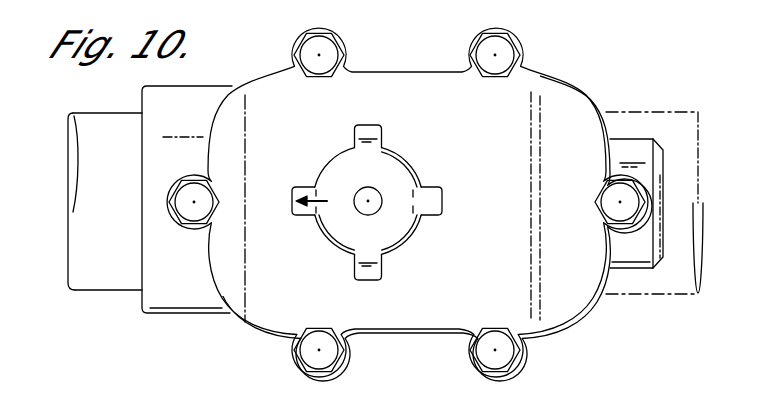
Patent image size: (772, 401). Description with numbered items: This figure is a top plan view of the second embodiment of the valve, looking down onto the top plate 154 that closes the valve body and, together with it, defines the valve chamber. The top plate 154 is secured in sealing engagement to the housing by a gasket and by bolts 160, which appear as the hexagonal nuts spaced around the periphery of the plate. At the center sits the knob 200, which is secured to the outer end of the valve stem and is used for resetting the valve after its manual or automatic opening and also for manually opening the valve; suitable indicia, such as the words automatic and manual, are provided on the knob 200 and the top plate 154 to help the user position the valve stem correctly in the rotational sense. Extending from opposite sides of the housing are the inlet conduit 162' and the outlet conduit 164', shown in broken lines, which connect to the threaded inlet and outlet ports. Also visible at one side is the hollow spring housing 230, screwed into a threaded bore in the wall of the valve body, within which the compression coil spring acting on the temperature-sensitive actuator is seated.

The top plate 154 is at (555, 88).
The bolts 160 is at (327, 48).
The inlet conduit 162' is at (131, 213).
The outlet conduit 164' is at (627, 213).
The knob 200 is at (383, 274).
The spring housing 230 is at (662, 197).